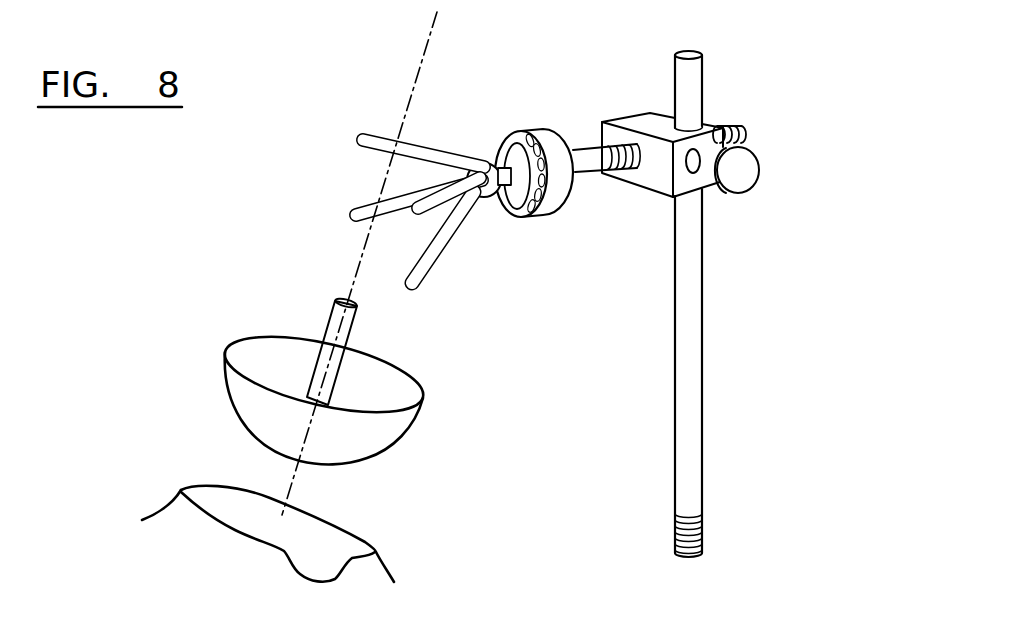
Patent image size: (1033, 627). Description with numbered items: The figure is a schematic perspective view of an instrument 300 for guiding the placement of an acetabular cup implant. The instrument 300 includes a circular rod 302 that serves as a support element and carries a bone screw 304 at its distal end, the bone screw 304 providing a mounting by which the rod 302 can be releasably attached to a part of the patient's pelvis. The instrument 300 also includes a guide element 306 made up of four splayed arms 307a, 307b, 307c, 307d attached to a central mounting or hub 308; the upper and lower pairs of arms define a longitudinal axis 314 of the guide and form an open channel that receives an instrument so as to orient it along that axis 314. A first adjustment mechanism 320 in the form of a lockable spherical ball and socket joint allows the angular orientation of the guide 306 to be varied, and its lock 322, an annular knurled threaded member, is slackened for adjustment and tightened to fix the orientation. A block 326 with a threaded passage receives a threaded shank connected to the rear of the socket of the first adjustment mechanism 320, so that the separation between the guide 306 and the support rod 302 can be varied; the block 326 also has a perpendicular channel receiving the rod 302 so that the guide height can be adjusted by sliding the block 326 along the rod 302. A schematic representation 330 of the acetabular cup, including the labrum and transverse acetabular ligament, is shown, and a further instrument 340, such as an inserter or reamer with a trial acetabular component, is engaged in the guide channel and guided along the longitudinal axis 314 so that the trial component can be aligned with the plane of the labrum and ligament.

The instrument 300 is at (732, 301).
The circular rod 302 is at (690, 328).
The bone screw 304 is at (716, 535).
The guide element 306 is at (324, 219).
The splayed arm 307a is at (350, 222).
The splayed arm 307b is at (362, 133).
The splayed arm 307c is at (412, 203).
The splayed arm 307d is at (421, 292).
The central mounting or hub 308 is at (488, 203).
The longitudinal axis 314 is at (418, 62).
The first adjustment mechanism 320 is at (549, 115).
The lock 322 is at (510, 130).
The block 326 is at (632, 113).
The schematic representation of the acetabular cup 330 is at (211, 537).
The further instrument 340 is at (248, 395).